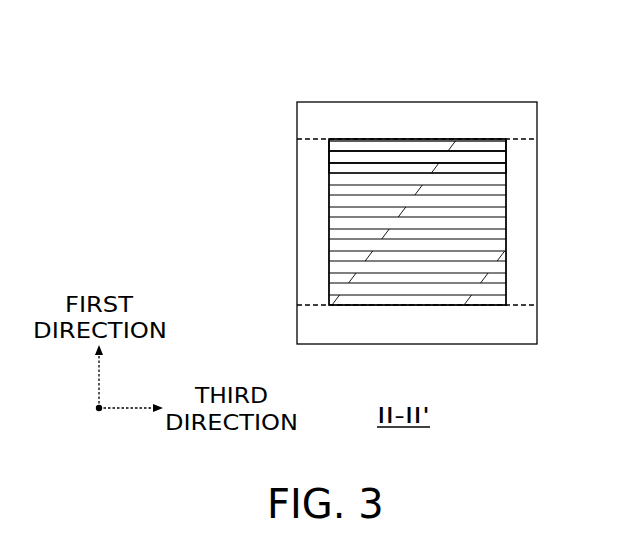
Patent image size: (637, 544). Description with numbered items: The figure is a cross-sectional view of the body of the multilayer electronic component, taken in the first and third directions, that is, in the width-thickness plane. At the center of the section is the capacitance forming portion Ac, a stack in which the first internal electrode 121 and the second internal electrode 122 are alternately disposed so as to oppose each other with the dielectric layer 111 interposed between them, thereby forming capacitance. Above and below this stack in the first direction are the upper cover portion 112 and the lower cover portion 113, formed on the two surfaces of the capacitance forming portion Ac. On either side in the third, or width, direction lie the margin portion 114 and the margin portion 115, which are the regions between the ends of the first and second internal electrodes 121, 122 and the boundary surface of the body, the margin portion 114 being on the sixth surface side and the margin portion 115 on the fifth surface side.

The upper cover portion 112 is at (422, 108).
The first internal electrode 121 is at (505, 146).
The dielectric layer 111 is at (505, 152).
The second internal electrode 122 is at (505, 166).
The margin portion 115 is at (528, 248).
The lower cover portion 113 is at (528, 323).
The margin portion 114 is at (312, 260).
The capacitance forming portion Ac is at (323, 224).